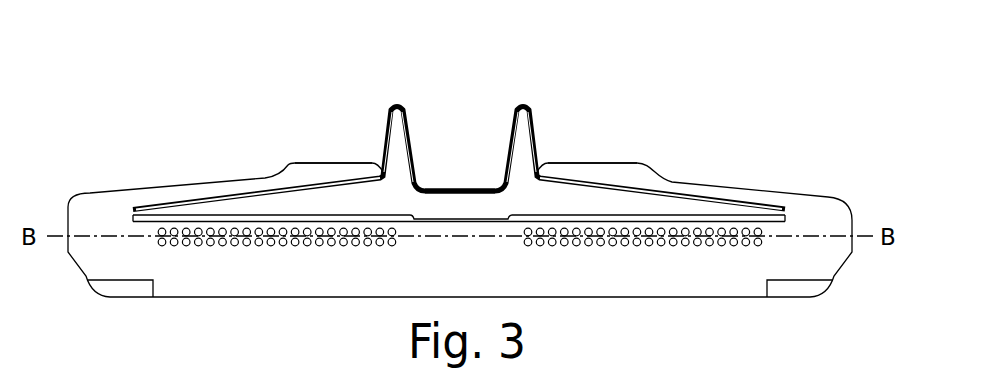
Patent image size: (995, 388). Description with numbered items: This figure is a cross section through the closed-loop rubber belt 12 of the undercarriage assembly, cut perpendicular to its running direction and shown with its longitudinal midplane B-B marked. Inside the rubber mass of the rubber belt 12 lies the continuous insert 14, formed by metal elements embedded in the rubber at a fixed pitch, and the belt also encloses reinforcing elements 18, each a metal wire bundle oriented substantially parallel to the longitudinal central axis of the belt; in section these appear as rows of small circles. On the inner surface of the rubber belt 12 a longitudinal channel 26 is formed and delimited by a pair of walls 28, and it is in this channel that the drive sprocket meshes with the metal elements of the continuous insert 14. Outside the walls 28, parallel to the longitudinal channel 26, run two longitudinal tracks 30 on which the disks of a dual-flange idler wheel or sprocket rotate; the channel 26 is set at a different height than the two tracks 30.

The rubber belt 12 is at (795, 191).
The continuous insert 14 is at (433, 223).
The reinforcing elements 18 is at (260, 246).
The longitudinal channel 26 is at (450, 187).
The walls 28 is at (387, 128).
The longitudinal tracks 30 is at (315, 163).